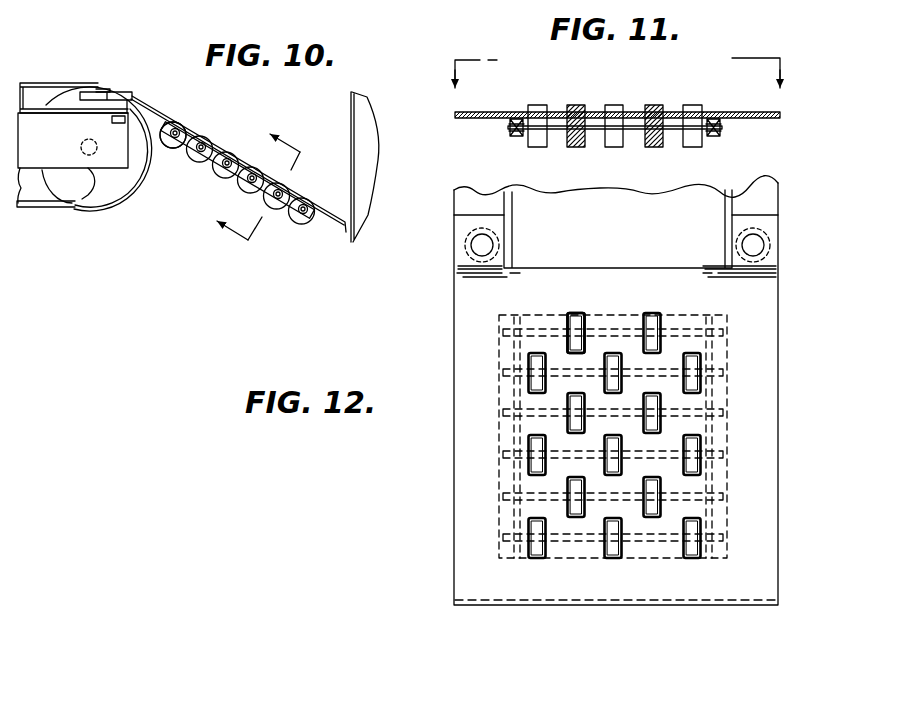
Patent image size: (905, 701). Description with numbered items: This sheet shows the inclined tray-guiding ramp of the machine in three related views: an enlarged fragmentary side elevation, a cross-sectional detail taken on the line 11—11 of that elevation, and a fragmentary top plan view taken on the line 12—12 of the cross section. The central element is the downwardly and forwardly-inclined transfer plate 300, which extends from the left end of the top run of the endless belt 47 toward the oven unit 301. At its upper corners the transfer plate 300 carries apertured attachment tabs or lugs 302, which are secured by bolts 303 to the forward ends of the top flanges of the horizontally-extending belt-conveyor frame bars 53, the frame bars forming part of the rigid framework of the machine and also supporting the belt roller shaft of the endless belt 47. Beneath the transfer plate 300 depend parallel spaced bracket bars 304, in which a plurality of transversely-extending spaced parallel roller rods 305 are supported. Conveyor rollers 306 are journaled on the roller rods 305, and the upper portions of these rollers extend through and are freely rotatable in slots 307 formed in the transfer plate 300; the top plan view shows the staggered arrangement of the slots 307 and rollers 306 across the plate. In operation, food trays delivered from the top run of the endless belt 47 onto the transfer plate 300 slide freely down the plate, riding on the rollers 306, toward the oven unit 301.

In FIG. 10, the endless belt 47 is at (50, 83).
In FIG. 10, the belt-conveyor frame bars 53 is at (75, 205).
In FIG. 12, the belt-conveyor frame bars 53 is at (458, 200).
In FIG. 10, the transfer plate 300 is at (153, 110).
In FIG. 11, the transfer plate 300 is at (493, 112).
In FIG. 12, the transfer plate 300 is at (762, 425).
In FIG. 10, the oven unit 301 is at (349, 122).
In FIG. 10, the apertured attachment tabs or lugs 302 is at (95, 89).
In FIG. 12, the apertured attachment tabs or lugs 302 is at (462, 229).
In FIG. 10, the bolts 303 is at (118, 90).
In FIG. 10, the bracket bars 304 is at (235, 173).
In FIG. 11, the bracket bars 304 is at (517, 136).
In FIG. 10, the roller rods 305 is at (238, 170).
In FIG. 11, the roller rods 305 is at (555, 128).
In FIG. 10, the conveyor rollers 306 is at (212, 127).
In FIG. 11, the conveyor rollers 306 is at (612, 105).
In FIG. 12, the conveyor rollers 306 is at (578, 338).
In FIG. 12, the slots 307 is at (577, 313).
In FIG. 10, the section line 11— 11 is at (261, 190).
In FIG. 11, the section line 12— 12 is at (617, 63).